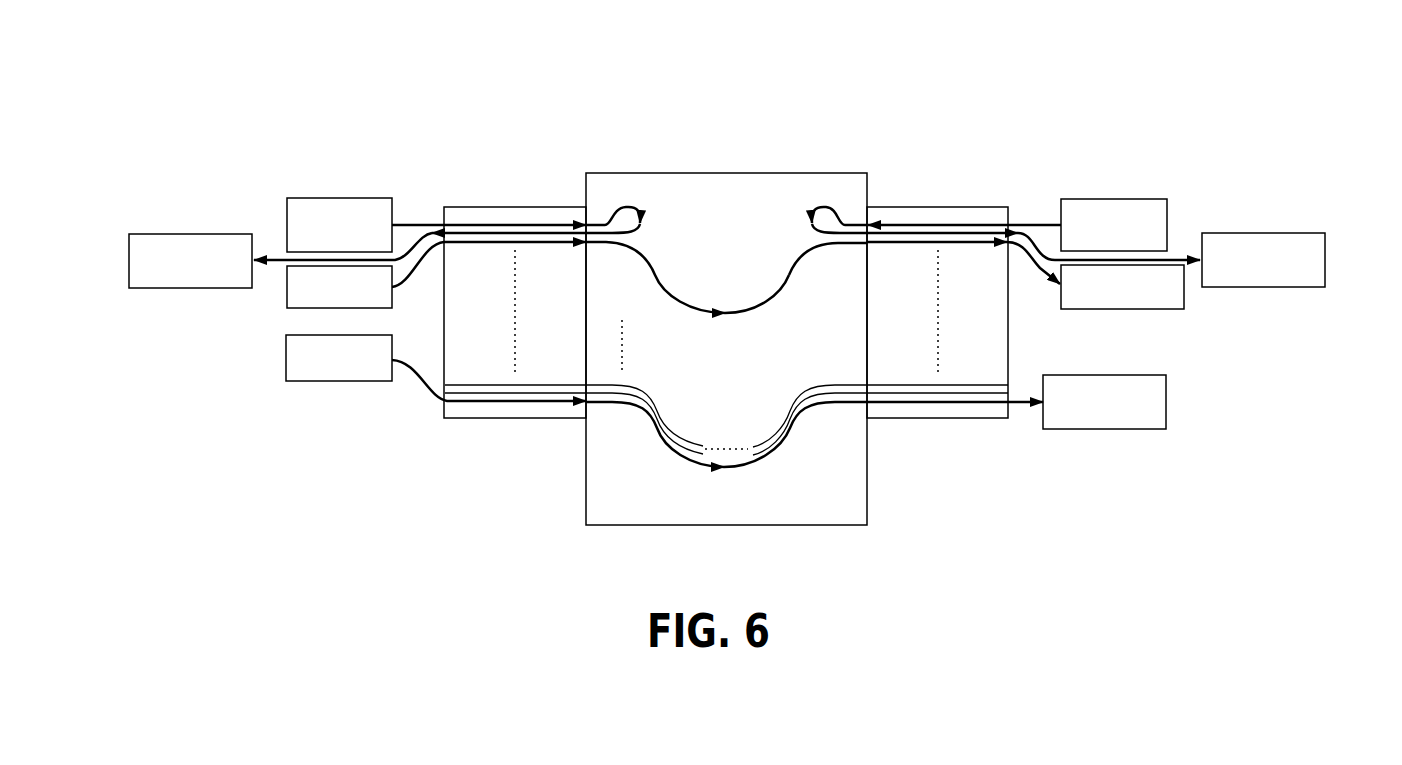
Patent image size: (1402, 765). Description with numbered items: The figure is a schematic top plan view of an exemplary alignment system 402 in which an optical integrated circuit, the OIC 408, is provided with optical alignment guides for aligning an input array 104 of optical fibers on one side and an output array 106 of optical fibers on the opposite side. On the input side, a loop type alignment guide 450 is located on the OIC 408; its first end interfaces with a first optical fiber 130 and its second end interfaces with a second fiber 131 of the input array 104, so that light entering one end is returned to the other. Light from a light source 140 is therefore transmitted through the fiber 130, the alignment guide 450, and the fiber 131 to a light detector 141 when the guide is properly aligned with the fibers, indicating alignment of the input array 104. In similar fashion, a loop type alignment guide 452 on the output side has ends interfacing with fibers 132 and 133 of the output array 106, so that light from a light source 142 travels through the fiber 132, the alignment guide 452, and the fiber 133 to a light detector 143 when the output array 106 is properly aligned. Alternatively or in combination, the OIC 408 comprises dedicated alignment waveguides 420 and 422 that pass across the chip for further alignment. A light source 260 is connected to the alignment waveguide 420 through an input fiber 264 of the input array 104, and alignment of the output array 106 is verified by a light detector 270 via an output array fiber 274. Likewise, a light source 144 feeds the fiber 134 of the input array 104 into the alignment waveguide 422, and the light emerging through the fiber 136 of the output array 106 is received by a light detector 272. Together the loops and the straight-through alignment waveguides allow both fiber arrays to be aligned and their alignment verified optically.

The alignment system 402 is at (405, 61).
The OIC 408 is at (762, 173).
The input array 104 is at (578, 207).
The output array 106 is at (880, 207).
The first optical fiber 130 is at (509, 230).
The second fiber 131 is at (509, 230).
The fiber 132 is at (943, 230).
The fiber 133 is at (943, 230).
The first optical fiber 134 is at (471, 403).
The fiber 136 is at (886, 402).
The light source 140 is at (305, 198).
The light detector 141 is at (162, 234).
The light source 142 is at (1152, 199).
The light detector 143 is at (1307, 233).
The light source 144 is at (286, 347).
The light source 260 is at (287, 285).
The input fiber 264 is at (551, 245).
The light detector 270 is at (1165, 309).
The light detector 272 is at (1152, 429).
The output array fiber 274 is at (903, 244).
The alignment waveguide 420 is at (768, 307).
The alignment waveguide 422 is at (698, 466).
The loop type alignment guide 450 is at (642, 203).
The loop type alignment guide 452 is at (803, 228).